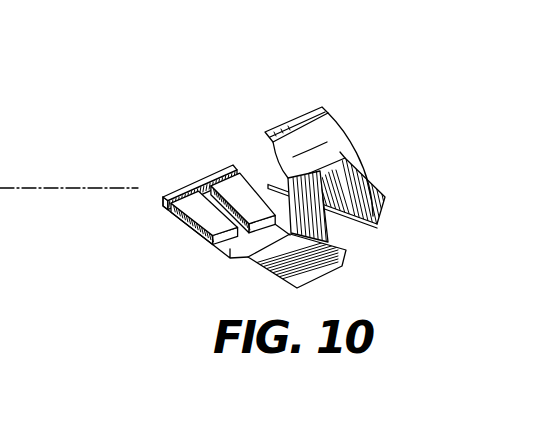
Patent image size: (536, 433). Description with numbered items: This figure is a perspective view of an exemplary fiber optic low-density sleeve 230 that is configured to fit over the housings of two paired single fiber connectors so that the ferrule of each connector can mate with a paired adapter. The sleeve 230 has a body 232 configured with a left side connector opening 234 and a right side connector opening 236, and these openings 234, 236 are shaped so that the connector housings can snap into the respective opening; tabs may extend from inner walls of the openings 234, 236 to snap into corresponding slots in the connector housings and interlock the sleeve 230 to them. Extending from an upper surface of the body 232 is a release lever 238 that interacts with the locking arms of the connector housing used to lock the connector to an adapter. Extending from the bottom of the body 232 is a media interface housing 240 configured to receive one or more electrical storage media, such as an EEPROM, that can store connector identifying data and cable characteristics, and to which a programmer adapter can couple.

The sleeve 230 is at (418, 78).
The body 232 is at (391, 207).
The left side connector opening 234 is at (363, 241).
The right side connector opening 236 is at (263, 176).
The release lever 238 is at (344, 135).
The media interface housing 240 is at (193, 232).